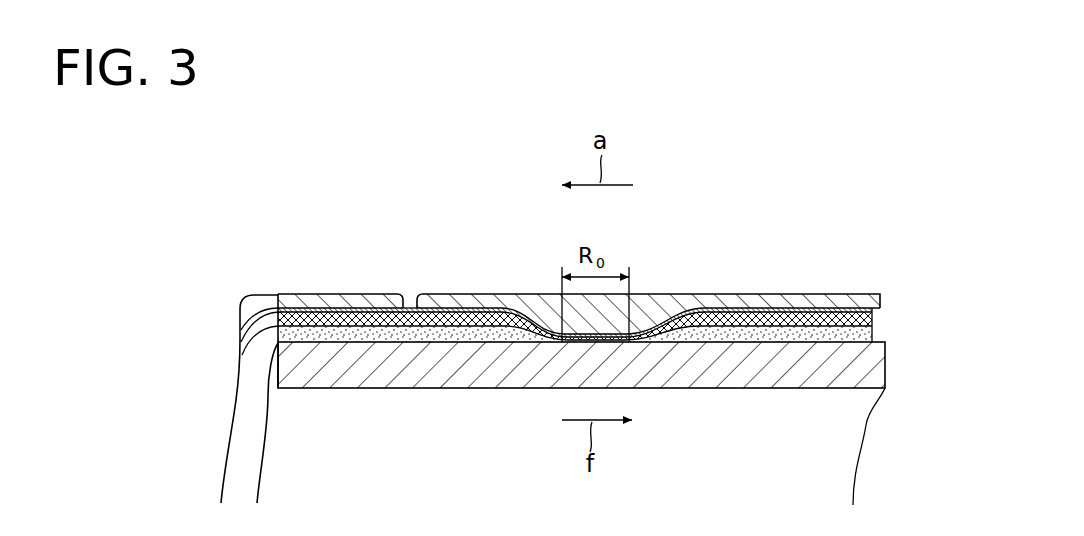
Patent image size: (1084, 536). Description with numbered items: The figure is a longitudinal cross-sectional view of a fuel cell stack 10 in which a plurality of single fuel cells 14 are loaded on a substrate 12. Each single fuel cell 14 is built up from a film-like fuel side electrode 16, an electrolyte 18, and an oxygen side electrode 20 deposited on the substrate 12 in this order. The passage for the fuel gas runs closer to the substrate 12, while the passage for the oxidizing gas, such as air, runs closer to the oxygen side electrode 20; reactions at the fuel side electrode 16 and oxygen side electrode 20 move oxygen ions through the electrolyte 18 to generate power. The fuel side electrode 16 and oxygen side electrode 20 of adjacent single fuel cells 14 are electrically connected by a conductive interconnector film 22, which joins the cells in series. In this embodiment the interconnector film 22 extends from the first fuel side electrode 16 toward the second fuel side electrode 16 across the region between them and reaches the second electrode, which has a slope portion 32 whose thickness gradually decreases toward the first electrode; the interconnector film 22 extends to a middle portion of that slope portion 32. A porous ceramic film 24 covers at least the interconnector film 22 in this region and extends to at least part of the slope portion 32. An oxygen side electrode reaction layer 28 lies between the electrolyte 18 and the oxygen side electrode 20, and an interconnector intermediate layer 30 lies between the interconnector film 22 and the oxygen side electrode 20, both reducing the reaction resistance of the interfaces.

The fuel cell stack 10 is at (508, 142).
The substrate 12 is at (874, 368).
The single fuel cell 14 is at (173, 297).
The fuel side electrode 16 is at (248, 355).
The electrolyte 18 is at (243, 337).
The oxygen side electrode 20 is at (245, 303).
The interconnector film 22 is at (491, 297).
The porous ceramic film 24 is at (630, 318).
The oxygen side electrode reaction layer 28 is at (320, 293).
The interconnector intermediate layer 30 is at (409, 296).
The slope portion 32 is at (663, 342).